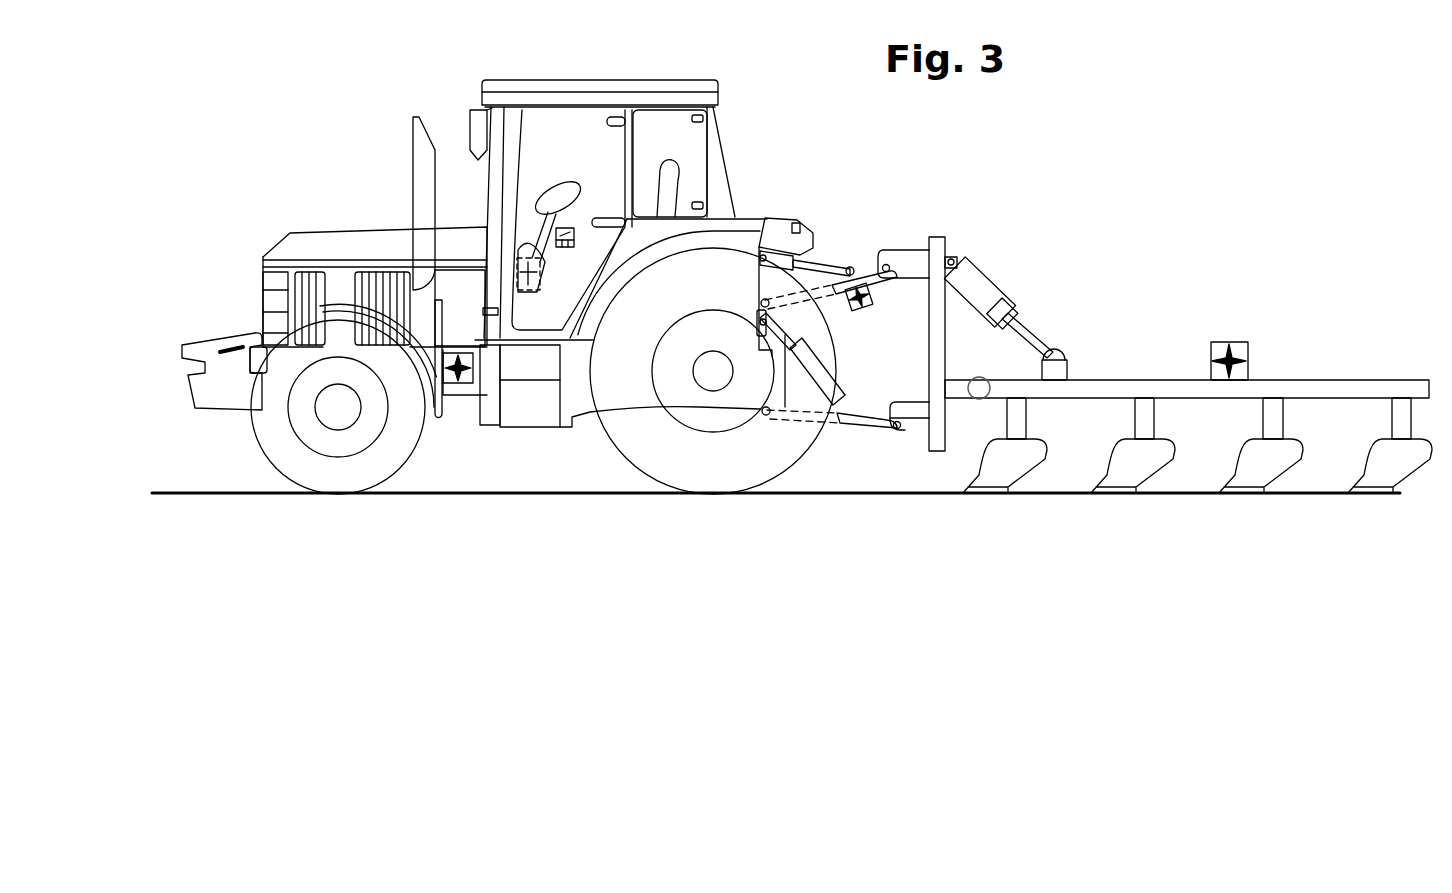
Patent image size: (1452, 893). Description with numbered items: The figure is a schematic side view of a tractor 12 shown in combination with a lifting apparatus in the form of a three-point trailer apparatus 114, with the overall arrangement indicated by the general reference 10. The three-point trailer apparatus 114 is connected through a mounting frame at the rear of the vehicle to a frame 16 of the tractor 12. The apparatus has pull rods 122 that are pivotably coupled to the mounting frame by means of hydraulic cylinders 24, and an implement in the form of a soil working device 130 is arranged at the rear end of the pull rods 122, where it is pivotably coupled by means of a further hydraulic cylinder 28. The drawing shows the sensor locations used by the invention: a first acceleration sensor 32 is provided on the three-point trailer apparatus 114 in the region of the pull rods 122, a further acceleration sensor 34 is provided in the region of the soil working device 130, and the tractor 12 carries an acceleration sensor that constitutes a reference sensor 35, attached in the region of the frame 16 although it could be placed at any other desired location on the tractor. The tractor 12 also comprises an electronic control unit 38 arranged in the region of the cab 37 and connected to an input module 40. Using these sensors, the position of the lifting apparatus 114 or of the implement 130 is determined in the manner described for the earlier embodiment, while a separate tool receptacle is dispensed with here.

The agricultural vehicle 10 is at (322, 133).
The tractor 12 is at (442, 297).
The frame 16 is at (426, 380).
The hydraulic cylinders 24 is at (772, 250).
The further hydraulic cylinder 28 is at (985, 282).
The first acceleration sensor 32 is at (867, 304).
The further acceleration sensor 34 is at (1228, 343).
The reference sensor 35 is at (462, 388).
The cab 37 is at (575, 120).
The electronic control unit 38 is at (528, 282).
The input module 40 is at (575, 232).
The three-point trailer apparatus 114 is at (862, 279).
The pull rods 122 is at (830, 283).
The soil working device 130 is at (1104, 391).